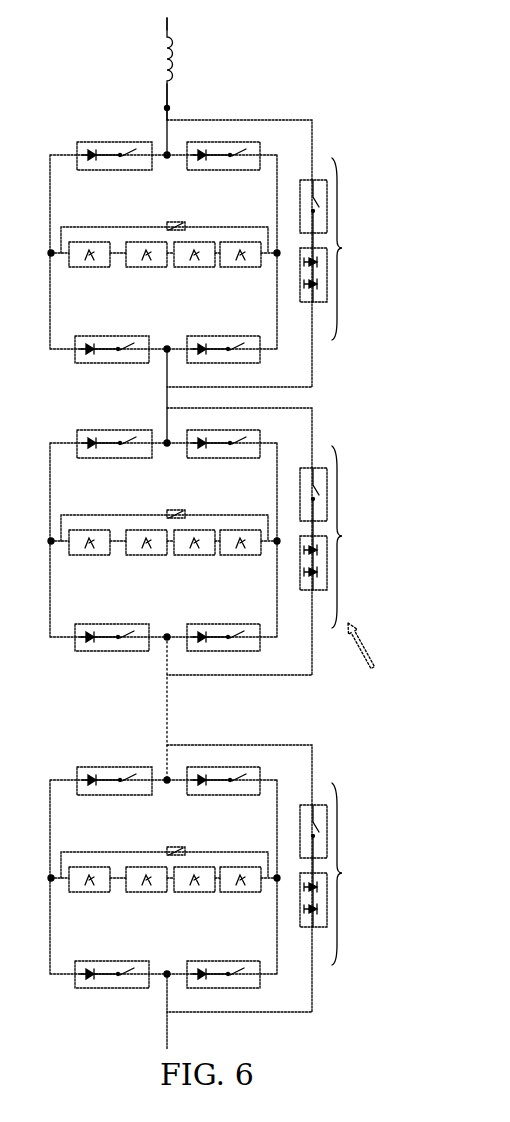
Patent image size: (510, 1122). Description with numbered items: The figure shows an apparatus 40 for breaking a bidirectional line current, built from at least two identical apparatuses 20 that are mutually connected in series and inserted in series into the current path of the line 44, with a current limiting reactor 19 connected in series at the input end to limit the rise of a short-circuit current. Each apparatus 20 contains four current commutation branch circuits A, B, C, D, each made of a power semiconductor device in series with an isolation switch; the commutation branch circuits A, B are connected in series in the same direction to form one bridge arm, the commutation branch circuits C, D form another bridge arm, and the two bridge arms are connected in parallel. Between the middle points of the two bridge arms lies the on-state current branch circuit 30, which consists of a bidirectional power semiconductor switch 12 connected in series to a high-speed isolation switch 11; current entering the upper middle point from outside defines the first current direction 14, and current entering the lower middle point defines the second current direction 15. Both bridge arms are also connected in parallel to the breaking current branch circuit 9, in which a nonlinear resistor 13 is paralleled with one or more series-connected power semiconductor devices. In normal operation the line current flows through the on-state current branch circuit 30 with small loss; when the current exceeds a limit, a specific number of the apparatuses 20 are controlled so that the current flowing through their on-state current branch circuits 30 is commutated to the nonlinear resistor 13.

The line 44 is at (170, 20).
The current limiting reactor 19 is at (172, 40).
The first current direction 14 is at (169, 94).
The second current direction 15 is at (170, 1030).
The apparatus for breaking a line bidirectional current 20 is at (315, 400).
The breaking current branch circuit 9 is at (237, 277).
The nonlinear resistor 13 is at (182, 216).
The high-speed isolation switch 11 is at (306, 180).
The bidirectional power semiconductor switch 12 is at (305, 302).
The on-state current branch circuit 30 is at (345, 561).
The apparatus 40 is at (363, 655).
The current commutation branch circuit A is at (228, 142).
The current commutation branch circuit B is at (119, 142).
The current commutation branch circuit C is at (226, 336).
The current commutation branch circuit D is at (117, 336).